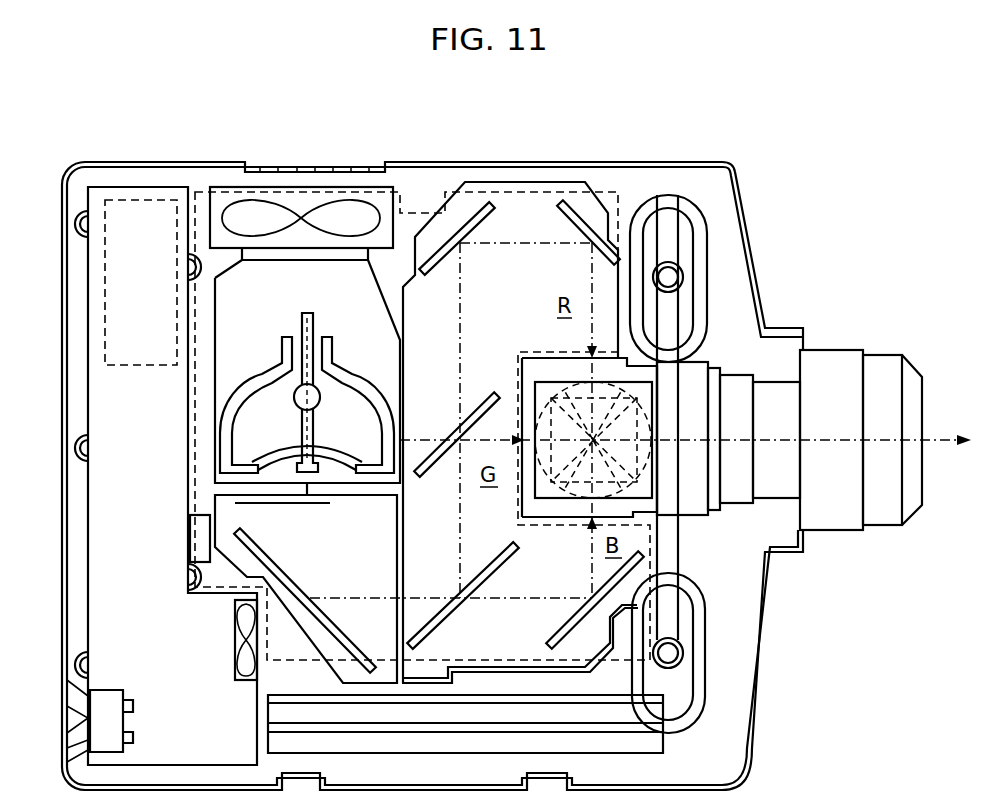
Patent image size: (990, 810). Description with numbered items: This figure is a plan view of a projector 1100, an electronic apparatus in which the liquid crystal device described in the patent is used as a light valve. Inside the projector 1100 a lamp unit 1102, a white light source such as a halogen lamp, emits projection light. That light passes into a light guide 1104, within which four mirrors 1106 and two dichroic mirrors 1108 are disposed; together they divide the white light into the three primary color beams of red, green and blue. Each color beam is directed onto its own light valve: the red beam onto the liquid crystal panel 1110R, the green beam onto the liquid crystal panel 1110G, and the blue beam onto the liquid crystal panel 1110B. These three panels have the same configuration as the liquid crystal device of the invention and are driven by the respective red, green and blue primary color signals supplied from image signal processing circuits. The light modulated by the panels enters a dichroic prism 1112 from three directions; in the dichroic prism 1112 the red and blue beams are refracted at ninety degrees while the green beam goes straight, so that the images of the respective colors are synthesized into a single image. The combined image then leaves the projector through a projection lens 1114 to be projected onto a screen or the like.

The projector 1100 is at (762, 163).
The lamp unit 1102 is at (352, 297).
The light guide 1104 is at (440, 205).
The mirrors 1106 is at (568, 213).
The dichroic mirrors 1108 is at (488, 573).
The liquid crystal panel 1110R is at (563, 358).
The liquid crystal panel 1110G is at (527, 410).
The liquid crystal panel 1110B is at (557, 510).
The dichroic prism 1112 is at (653, 500).
The projection lens 1114 is at (892, 364).